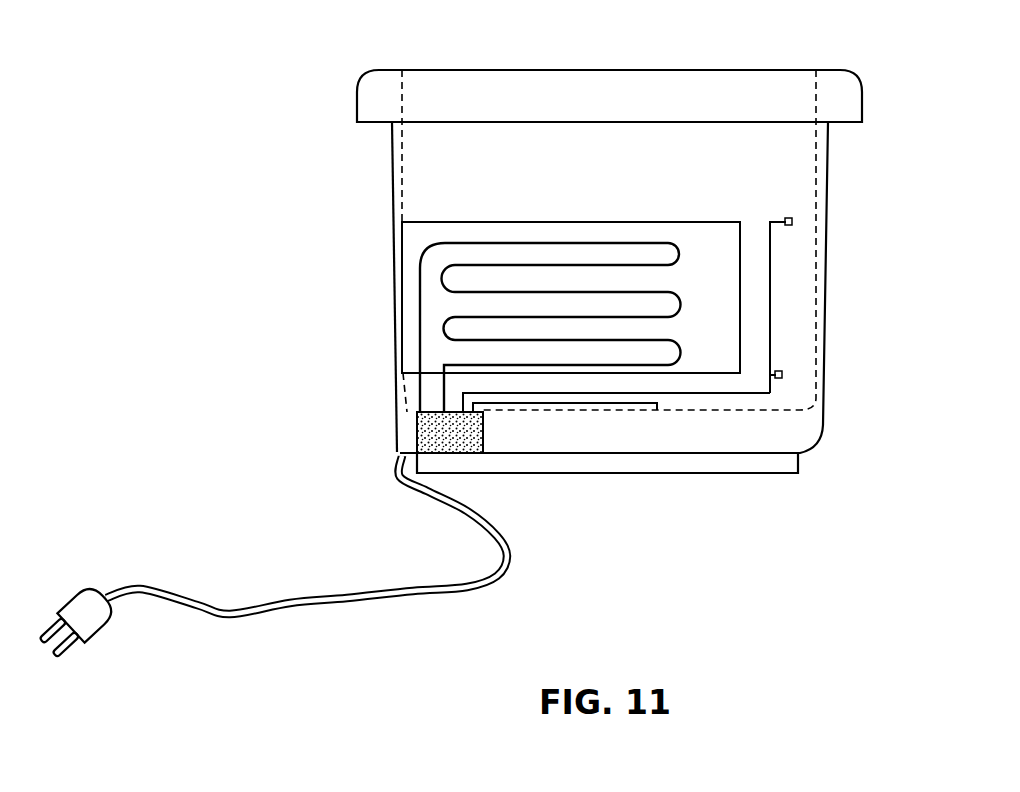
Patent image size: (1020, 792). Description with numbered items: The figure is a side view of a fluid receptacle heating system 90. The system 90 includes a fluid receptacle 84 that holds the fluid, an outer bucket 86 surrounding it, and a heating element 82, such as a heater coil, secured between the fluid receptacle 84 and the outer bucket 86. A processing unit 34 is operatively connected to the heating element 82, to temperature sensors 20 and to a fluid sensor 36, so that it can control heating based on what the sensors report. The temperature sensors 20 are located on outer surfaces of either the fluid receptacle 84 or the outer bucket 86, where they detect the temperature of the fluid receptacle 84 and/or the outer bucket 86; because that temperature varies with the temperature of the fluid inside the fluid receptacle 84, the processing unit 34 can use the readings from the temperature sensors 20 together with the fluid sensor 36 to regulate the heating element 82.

The fluid receptacle heating system 90 is at (289, 62).
The heating element 82 is at (420, 277).
The fluid receptacle 84 is at (829, 151).
The outer bucket 86 is at (821, 428).
The temperature sensors 20 is at (793, 224).
The processing unit 34 is at (411, 440).
The fluid sensor 36 is at (663, 413).